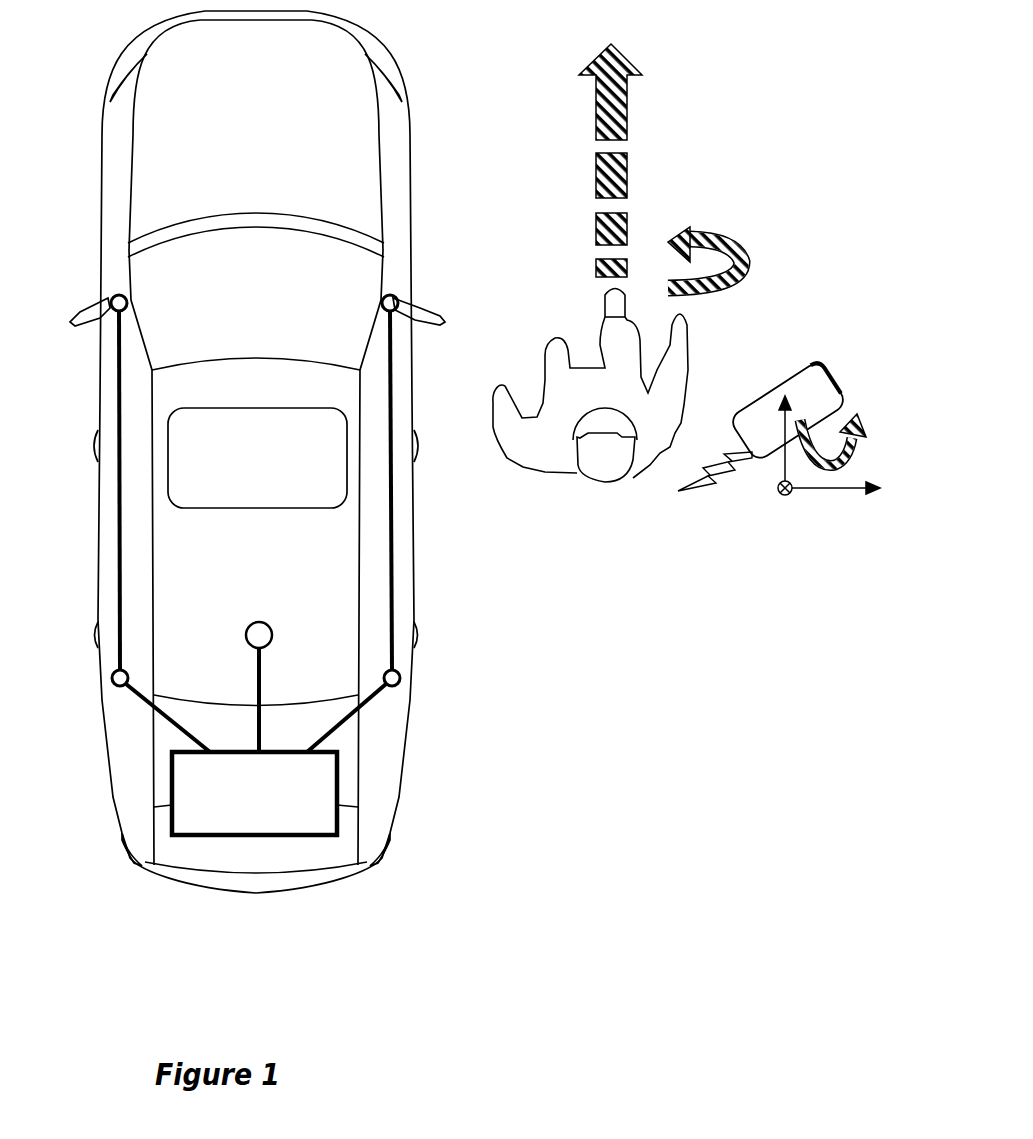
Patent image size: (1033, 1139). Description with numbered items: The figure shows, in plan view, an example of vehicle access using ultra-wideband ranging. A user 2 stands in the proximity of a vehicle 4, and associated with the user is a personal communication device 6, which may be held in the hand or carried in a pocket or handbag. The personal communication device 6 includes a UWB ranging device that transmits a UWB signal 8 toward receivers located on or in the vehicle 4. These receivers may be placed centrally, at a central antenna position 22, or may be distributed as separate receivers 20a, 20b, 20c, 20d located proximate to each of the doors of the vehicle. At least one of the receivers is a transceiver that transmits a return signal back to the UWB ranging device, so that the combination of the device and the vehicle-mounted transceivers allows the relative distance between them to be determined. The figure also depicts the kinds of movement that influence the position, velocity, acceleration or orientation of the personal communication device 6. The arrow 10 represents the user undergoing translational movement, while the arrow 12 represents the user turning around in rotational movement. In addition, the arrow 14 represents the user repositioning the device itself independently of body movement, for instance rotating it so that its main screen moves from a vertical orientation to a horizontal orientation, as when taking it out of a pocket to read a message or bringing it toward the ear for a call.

The user 2 is at (608, 484).
The vehicle 4 is at (410, 143).
The personal communication device 6 is at (795, 372).
The UWB signal 8 is at (702, 495).
The arrow depicting translational movement 10 is at (635, 160).
The arrow depicting rotational movement 12 is at (738, 247).
The arrow depicting device rotation 14 is at (862, 445).
The receiver 20a is at (396, 296).
The receiver 20b is at (112, 296).
The receiver 20c is at (401, 677).
The receiver 20d is at (111, 677).
The central antenna position 22 is at (253, 622).